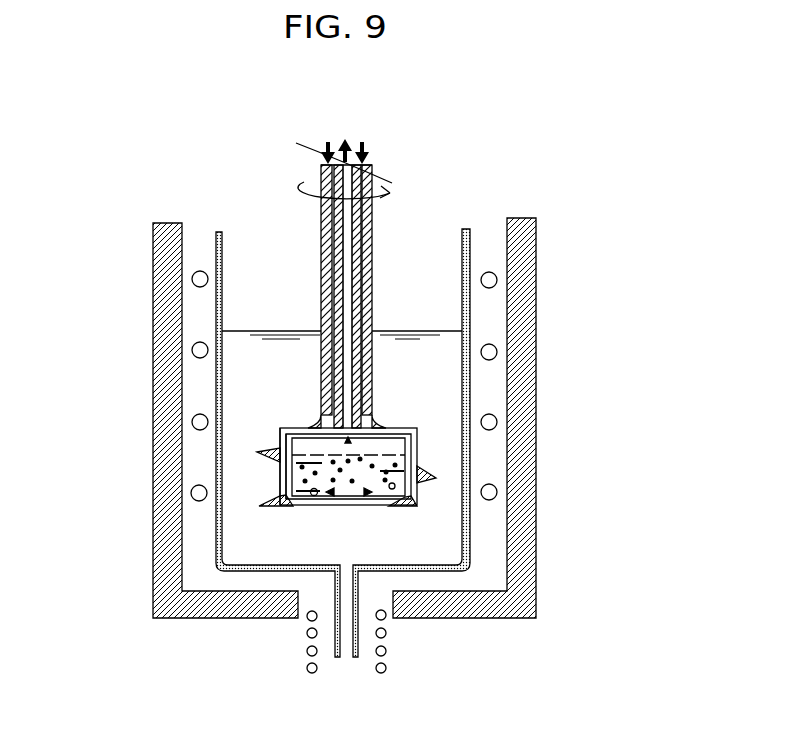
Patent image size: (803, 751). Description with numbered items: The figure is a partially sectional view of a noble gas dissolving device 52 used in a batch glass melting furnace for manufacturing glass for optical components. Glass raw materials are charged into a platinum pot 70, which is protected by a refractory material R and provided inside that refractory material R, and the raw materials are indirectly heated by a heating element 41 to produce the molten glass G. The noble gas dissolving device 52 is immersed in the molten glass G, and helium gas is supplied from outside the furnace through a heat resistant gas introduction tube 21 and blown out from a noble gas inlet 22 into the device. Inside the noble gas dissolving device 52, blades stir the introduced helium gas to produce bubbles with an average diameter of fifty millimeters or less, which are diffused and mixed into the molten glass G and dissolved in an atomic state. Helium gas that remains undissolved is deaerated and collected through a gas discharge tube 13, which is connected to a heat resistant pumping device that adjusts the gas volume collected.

The gas discharge tube 13 is at (330, 263).
The heat resistant gas introduction tube 21 is at (375, 295).
The noble gas dissolving device 52 is at (383, 240).
The noble gas inlet 22 is at (313, 502).
The heating element 41 is at (192, 496).
The platinum pot 70 is at (478, 316).
The refractory material R is at (167, 318).
The molten glass G is at (263, 398).